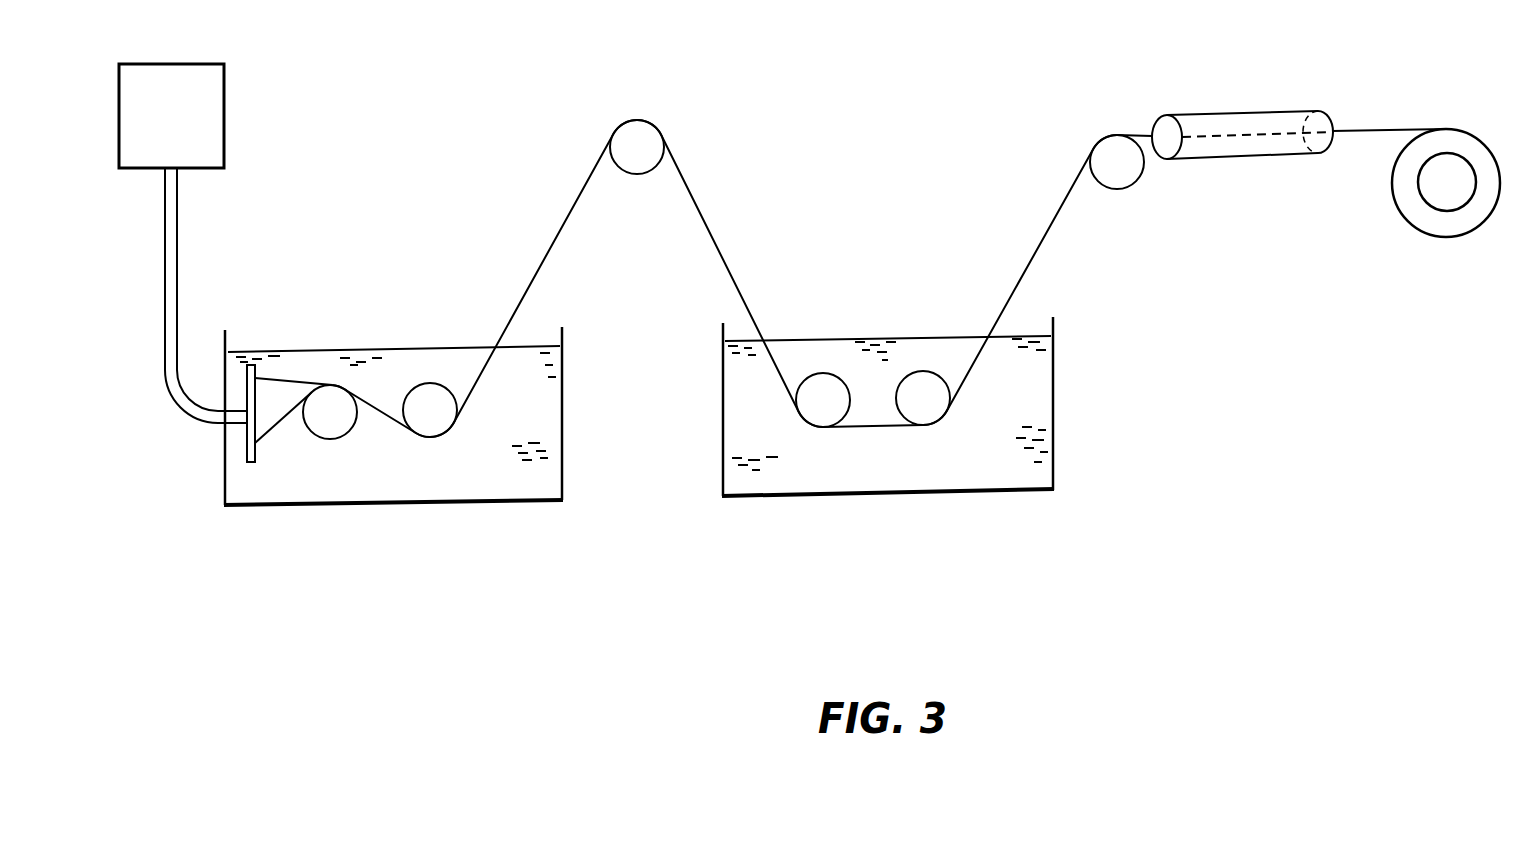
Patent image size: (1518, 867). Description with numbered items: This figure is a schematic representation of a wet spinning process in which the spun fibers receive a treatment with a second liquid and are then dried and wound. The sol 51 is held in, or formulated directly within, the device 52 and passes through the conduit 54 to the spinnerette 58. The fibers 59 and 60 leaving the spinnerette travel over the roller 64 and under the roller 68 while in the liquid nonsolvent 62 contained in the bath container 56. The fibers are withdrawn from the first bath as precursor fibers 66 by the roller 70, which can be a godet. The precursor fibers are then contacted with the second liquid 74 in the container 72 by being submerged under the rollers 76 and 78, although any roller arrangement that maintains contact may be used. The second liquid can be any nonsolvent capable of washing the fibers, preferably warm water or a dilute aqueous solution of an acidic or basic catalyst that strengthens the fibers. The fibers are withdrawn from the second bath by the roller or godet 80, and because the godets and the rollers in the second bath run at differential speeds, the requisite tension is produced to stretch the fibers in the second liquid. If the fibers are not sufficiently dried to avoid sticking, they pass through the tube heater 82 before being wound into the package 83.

The sol 51 is at (173, 145).
The device 52 is at (224, 76).
The conduit 54 is at (167, 400).
The bath container 56 is at (401, 505).
The spinnerette 58 is at (250, 466).
The fiber 59 is at (273, 378).
The fiber 60 is at (282, 417).
The liquid nonsolvent 62 is at (518, 491).
The roller 64 is at (345, 418).
The precursor fibers 66 is at (363, 400).
The roller 68 is at (437, 420).
The roller 70 is at (620, 162).
The container 72 is at (927, 497).
The second liquid 74 is at (761, 407).
The roller 76 is at (828, 373).
The roller 78 is at (922, 372).
The roller 80 is at (1143, 168).
The tube heater 82 is at (1252, 113).
The package 83 is at (1446, 238).